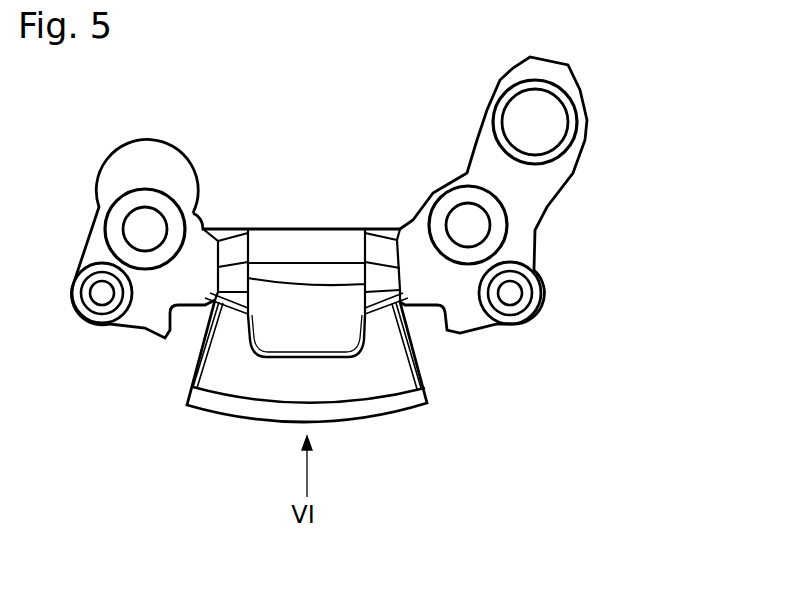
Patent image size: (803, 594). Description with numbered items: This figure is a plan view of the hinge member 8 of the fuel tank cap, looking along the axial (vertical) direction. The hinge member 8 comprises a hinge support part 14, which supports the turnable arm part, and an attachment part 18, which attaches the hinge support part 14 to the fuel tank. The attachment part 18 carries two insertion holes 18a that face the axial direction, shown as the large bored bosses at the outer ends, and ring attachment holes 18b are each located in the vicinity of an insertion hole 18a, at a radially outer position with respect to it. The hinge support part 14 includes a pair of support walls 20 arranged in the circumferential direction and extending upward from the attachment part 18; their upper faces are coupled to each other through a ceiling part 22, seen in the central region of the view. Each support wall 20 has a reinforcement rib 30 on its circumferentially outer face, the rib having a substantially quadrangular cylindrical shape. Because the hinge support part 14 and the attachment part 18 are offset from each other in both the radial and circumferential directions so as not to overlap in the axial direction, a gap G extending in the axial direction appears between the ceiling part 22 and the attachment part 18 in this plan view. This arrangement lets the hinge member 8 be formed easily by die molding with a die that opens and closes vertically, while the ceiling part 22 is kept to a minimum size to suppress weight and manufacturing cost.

The hinge member 8 is at (344, 270).
The hinge support part 14 is at (329, 207).
The attachment part 18 is at (324, 209).
The insertion hole 18a is at (146, 220).
The ring attachment hole 18b is at (98, 297).
The support wall 20 is at (228, 278).
The ceiling part 22 is at (275, 391).
The reinforcement rib 30 is at (185, 336).
The gap G is at (292, 298).